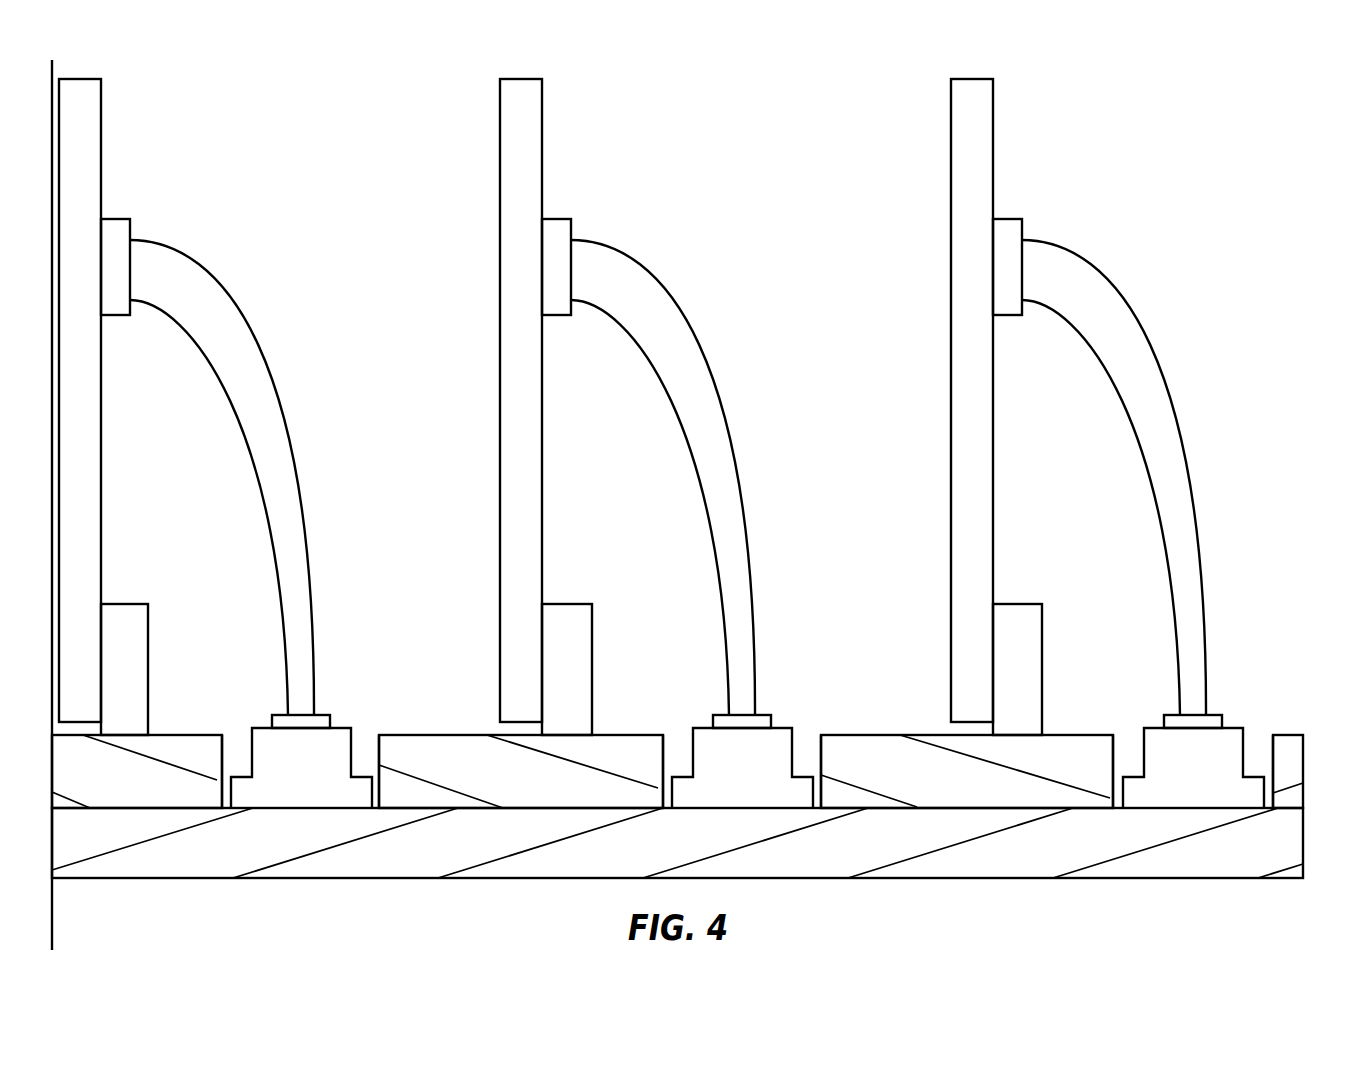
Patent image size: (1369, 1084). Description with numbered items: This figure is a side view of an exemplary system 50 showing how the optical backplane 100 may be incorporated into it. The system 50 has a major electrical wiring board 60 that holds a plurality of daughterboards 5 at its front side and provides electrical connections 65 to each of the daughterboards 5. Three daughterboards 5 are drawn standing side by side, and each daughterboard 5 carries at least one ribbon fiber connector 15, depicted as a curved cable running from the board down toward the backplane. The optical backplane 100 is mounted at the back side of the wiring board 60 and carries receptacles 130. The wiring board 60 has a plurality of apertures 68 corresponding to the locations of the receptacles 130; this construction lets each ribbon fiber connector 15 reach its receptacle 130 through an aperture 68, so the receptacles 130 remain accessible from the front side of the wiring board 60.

The daughterboard 5 is at (101, 135).
The ribbon fiber connector 15 is at (272, 370).
The system 50 is at (1249, 97).
The electrical wiring board 60 is at (1305, 762).
The electrical connection 65 is at (133, 604).
The aperture 68 is at (367, 740).
The optical backplane 100 is at (1242, 855).
The receptacle 130 is at (260, 743).